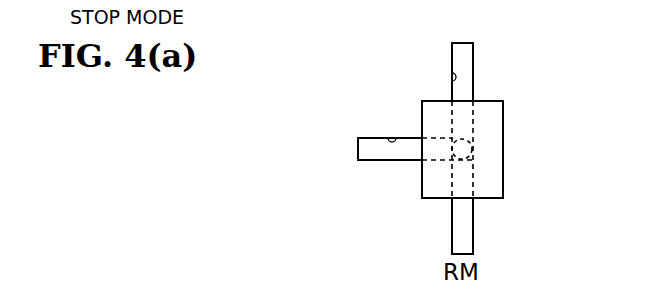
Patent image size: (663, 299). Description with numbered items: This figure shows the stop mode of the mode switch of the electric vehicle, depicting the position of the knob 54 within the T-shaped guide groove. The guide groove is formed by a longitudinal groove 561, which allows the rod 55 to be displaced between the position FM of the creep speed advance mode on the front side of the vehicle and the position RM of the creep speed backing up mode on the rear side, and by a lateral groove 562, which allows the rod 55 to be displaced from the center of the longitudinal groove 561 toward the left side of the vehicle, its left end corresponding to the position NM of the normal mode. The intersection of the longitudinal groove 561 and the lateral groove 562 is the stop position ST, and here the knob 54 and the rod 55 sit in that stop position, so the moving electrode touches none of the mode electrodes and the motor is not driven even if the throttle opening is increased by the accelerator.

The knob 54 is at (422, 190).
The rod 55 is at (462, 139).
The longitudinal groove 561 is at (452, 77).
The lateral groove 562 is at (390, 137).